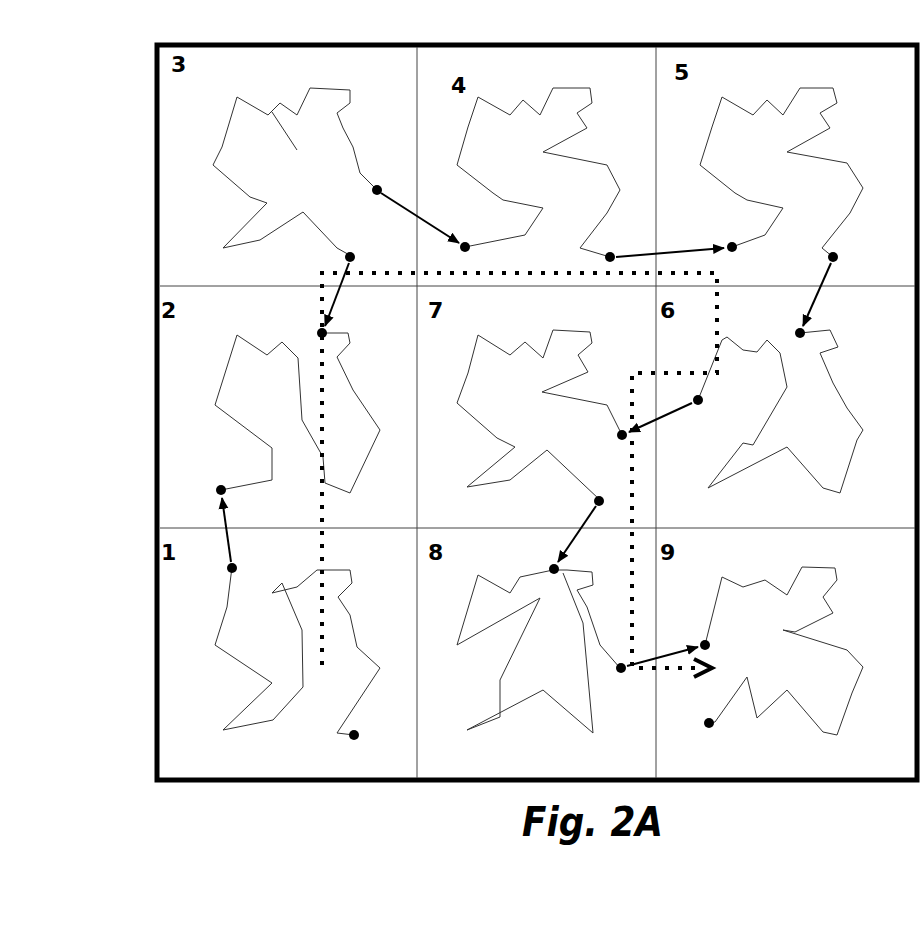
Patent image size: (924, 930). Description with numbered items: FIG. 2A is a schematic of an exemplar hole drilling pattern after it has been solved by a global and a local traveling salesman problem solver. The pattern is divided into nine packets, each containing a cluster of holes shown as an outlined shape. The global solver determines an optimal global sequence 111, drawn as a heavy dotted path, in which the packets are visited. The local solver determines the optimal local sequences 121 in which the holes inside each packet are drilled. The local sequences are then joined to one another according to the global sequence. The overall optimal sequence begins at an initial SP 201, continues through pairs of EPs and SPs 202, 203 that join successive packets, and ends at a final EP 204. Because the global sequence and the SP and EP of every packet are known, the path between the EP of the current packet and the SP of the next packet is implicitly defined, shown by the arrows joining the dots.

The optimal local sequence 121 is at (538, 134).
The optimal global sequence 111 is at (478, 275).
The initial SP 201 is at (397, 729).
The EP 202 is at (237, 568).
The SP 203 is at (216, 489).
The final EP 204 is at (714, 723).